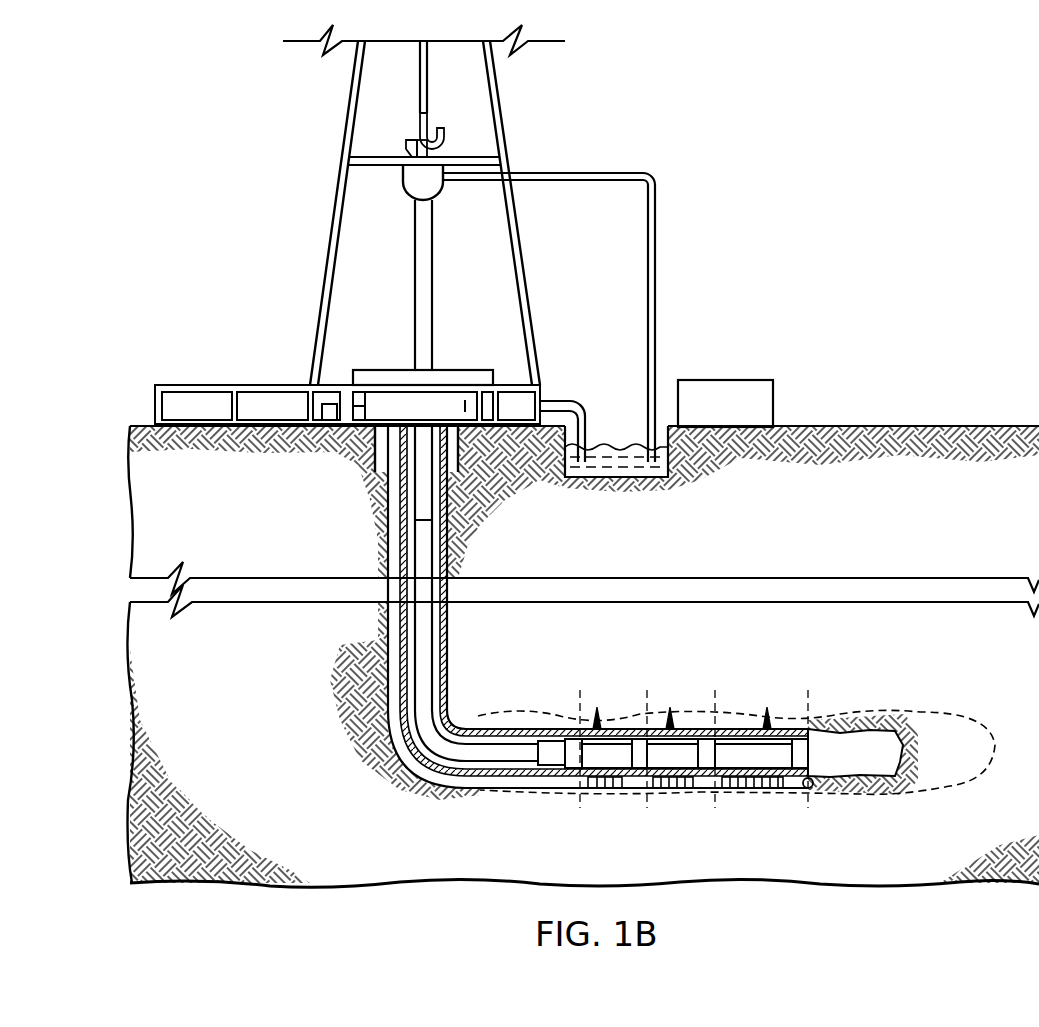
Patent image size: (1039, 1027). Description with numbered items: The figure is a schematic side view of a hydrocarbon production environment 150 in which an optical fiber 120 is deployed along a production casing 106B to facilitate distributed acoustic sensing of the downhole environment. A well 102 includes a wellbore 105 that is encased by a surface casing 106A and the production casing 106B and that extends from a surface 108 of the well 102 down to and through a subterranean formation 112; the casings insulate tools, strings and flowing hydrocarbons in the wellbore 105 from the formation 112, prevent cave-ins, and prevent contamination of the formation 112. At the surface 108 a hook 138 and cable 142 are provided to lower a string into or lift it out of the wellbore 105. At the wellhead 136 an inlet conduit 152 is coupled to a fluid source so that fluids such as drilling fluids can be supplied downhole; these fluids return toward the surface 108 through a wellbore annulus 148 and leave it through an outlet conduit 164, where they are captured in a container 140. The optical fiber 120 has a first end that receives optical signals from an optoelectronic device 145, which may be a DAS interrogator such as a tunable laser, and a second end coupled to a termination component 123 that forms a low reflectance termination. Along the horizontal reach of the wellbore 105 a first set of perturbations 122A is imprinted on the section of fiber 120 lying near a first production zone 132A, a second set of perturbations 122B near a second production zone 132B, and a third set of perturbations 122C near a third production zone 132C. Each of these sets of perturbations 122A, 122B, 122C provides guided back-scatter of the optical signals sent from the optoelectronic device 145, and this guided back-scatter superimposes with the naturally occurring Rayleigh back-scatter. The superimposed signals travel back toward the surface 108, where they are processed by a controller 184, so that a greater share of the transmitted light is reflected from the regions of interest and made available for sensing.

The well 102 is at (452, 361).
The wellbore 105 is at (442, 628).
The surface casing 106A is at (458, 456).
The production casing 106B is at (400, 512).
The surface 108 is at (938, 426).
The subterranean formation 112 is at (298, 742).
The optical fiber 120 is at (387, 690).
The first set of perturbations 122A is at (609, 814).
The second set of perturbations 122B is at (679, 814).
The third set of perturbations 122C is at (753, 814).
The termination component 123 is at (812, 789).
The first region of interest (first production zone) 132A is at (600, 712).
The second region of interest (second production zone) 132B is at (673, 712).
The third region of interest (third production zone) 132C is at (770, 712).
The wellhead 136 is at (398, 370).
The hook 138 is at (446, 138).
The container 140 is at (622, 478).
The cable 142 is at (418, 100).
The optoelectronic device 145 is at (333, 404).
The wellbore annulus 148 is at (438, 654).
The hydrocarbon production environment 150 is at (268, 188).
The inlet conduit 152 is at (620, 173).
The outlet conduit 164 is at (556, 401).
The controller 184 is at (728, 380).